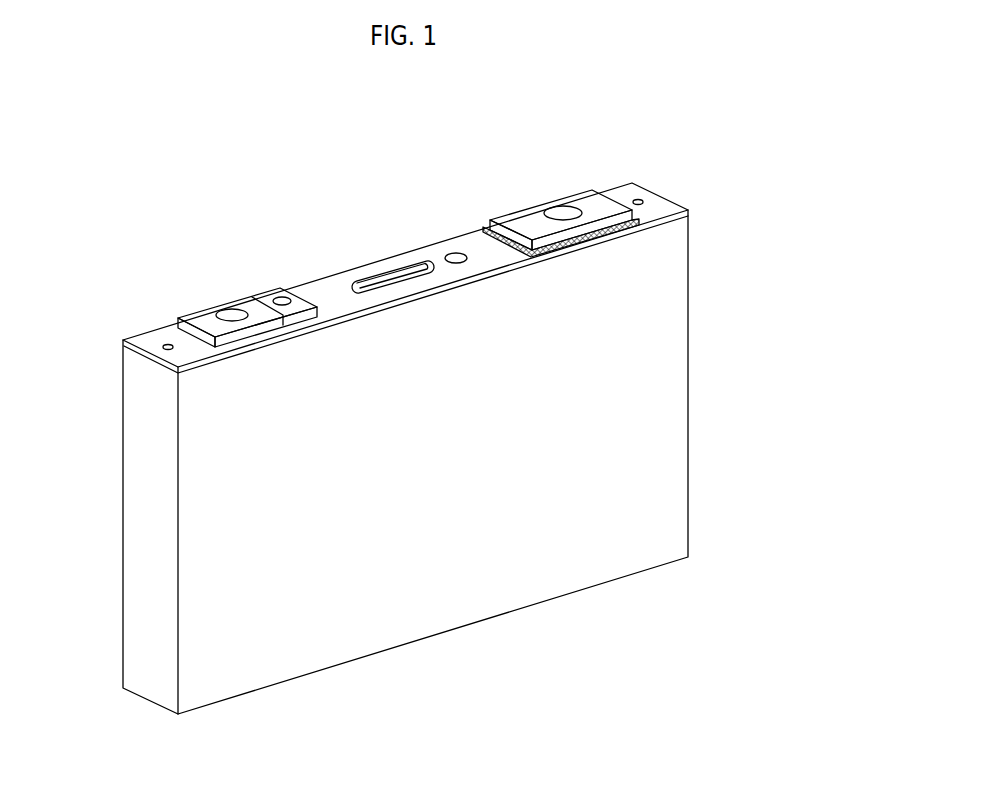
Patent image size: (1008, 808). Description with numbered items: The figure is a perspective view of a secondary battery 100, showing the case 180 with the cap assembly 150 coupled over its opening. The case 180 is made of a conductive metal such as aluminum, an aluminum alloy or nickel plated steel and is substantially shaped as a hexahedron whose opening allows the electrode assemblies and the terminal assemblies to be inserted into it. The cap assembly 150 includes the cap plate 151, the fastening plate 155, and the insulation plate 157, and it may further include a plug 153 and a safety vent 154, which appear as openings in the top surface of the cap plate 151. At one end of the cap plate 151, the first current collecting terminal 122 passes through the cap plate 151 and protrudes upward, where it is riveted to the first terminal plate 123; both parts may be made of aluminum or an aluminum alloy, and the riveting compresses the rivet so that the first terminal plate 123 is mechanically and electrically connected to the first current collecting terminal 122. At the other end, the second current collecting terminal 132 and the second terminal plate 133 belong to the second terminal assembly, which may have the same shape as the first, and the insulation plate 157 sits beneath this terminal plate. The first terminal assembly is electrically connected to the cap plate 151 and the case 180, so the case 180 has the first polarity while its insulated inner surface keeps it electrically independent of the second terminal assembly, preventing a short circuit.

The secondary battery 100 is at (83, 120).
The case 180 is at (684, 385).
The cap assembly 150 is at (433, 187).
The cap plate 151 is at (330, 282).
The first current collecting terminal 122 is at (237, 313).
The first terminal plate 123 is at (178, 320).
The fastening plate 155 is at (270, 290).
The safety vent 154 is at (375, 277).
The plug 153 is at (452, 255).
The insulation plate 157 is at (487, 227).
The second current collecting terminal 132 is at (563, 205).
The second terminal plate 133 is at (607, 190).